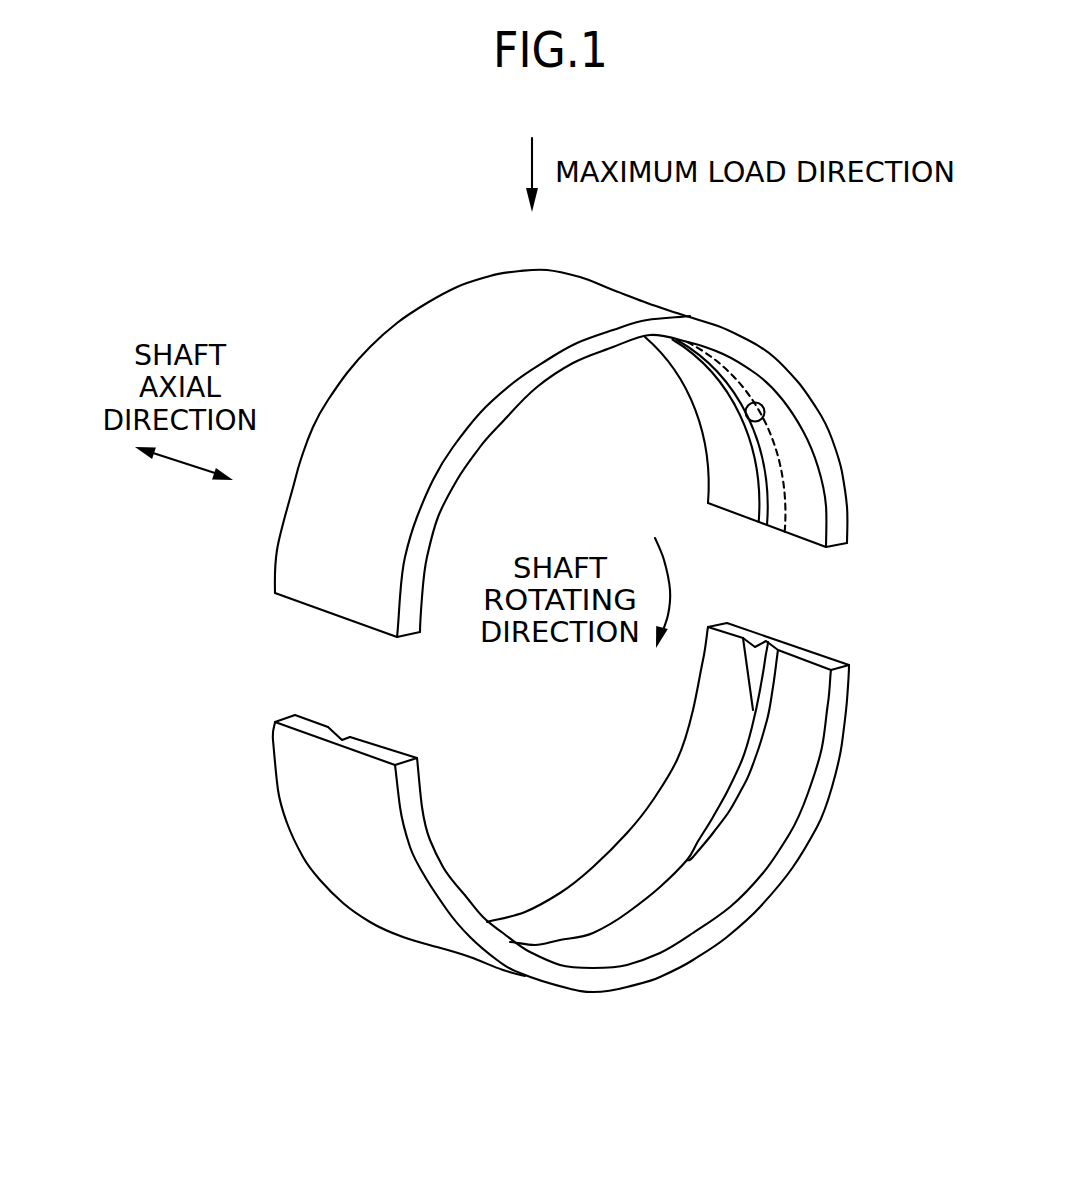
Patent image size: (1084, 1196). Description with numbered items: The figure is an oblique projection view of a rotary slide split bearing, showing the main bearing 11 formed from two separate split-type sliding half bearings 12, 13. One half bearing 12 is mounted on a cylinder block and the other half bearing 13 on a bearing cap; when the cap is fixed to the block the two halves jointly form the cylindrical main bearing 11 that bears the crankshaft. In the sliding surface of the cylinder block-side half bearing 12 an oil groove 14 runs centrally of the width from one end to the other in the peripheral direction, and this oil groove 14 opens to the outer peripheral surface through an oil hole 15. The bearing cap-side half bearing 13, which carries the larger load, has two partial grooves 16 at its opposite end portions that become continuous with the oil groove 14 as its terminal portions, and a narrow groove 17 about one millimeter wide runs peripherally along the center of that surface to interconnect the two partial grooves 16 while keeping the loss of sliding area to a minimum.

The main bearing 11 is at (860, 382).
The half bearing 12 is at (600, 295).
The half bearing 13 is at (400, 922).
The oil groove 14 is at (772, 477).
The oil hole 15 is at (752, 420).
The partial grooves 16 is at (352, 742).
The narrow groove 17 is at (683, 860).